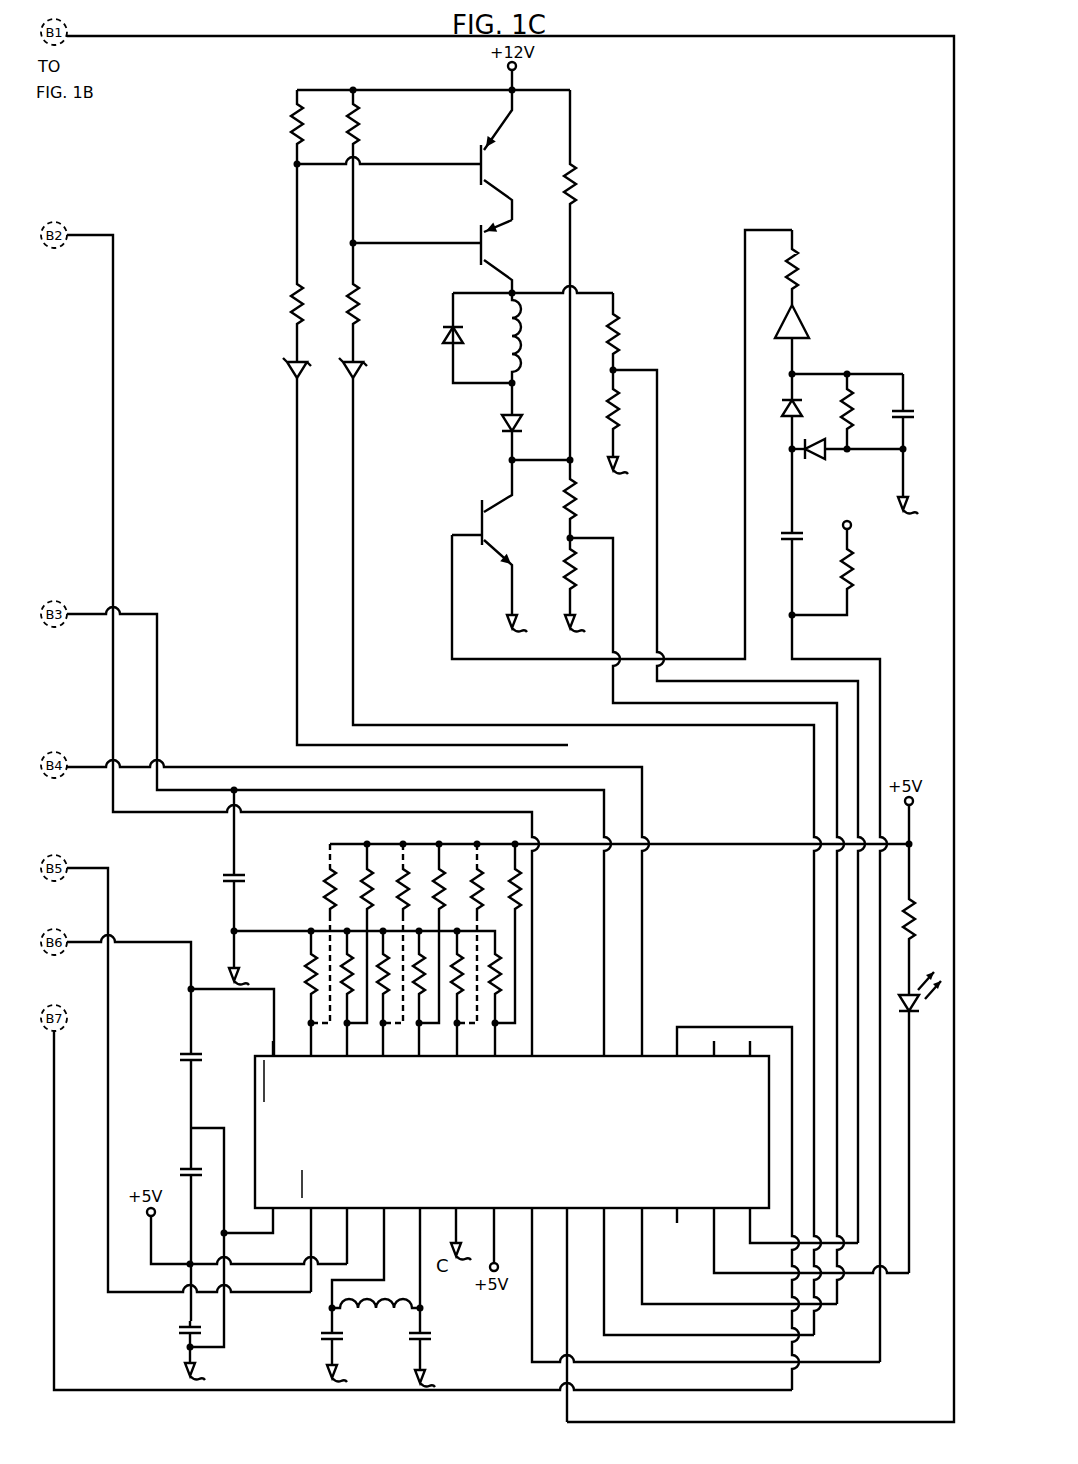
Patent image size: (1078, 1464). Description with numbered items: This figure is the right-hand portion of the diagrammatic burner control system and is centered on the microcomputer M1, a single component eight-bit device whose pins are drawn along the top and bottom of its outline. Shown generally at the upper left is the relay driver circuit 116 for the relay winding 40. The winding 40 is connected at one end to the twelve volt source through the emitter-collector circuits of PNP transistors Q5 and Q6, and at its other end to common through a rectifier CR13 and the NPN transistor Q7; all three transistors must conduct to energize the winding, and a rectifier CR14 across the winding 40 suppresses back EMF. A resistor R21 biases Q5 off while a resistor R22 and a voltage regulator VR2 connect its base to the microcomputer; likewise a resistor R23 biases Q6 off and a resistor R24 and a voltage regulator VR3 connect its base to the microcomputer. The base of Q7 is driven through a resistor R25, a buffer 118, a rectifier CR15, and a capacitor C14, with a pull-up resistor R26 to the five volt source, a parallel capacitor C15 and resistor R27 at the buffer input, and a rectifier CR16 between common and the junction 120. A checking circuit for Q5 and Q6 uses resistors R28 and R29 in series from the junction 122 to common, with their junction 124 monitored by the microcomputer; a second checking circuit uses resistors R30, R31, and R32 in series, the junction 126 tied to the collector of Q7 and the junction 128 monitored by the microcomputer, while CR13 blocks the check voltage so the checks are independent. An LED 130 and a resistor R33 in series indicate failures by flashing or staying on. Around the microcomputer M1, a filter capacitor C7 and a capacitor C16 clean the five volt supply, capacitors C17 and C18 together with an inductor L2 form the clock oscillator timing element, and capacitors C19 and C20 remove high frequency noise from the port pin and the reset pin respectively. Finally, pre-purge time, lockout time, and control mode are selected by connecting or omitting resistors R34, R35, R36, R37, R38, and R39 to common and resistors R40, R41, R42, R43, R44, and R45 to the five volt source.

The relay driver circuit 116 is at (258, 217).
The buffer 118 is at (804, 326).
The junction 120 is at (790, 452).
The junction 122 is at (514, 290).
The junction 124 is at (618, 370).
The junction 126 is at (568, 460).
The junction 128 is at (576, 536).
The LED 130 is at (910, 1012).
The relay winding 40 is at (522, 328).
The microcomputer M1 is at (566, 1224).
The PNP transistor Q5 is at (500, 166).
The PNP transistor Q6 is at (500, 248).
The NPN transistor Q7 is at (498, 532).
The resistor R21 is at (292, 126).
The resistor R22 is at (292, 300).
The resistor R23 is at (358, 126).
The resistor R24 is at (358, 304).
The resistor R25 is at (800, 266).
The pull-up resistor R26 is at (854, 572).
The resistor R27 is at (856, 424).
The resistor R28 is at (620, 328).
The resistor R29 is at (618, 418).
The resistor R30 is at (578, 190).
The resistor R31 is at (576, 500).
The resistor R32 is at (576, 580).
The resistor R33 is at (916, 916).
The resistor R34 is at (307, 976).
The resistor R35 is at (344, 1020).
The resistor R36 is at (380, 1020).
The resistor R37 is at (416, 1020).
The resistor R38 is at (454, 1020).
The resistor R39 is at (492, 1020).
The resistor R40 is at (326, 880).
The resistor R41 is at (362, 856).
The resistor R42 is at (400, 856).
The resistor R43 is at (436, 856).
The resistor R44 is at (474, 856).
The resistor R45 is at (512, 856).
The voltage regulator VR2 is at (290, 372).
The voltage regulator VR3 is at (360, 374).
The rectifier CR13 is at (500, 440).
The rectifier CR14 is at (446, 330).
The rectifier CR15 is at (822, 402).
The rectifier CR16 is at (814, 462).
The filter capacitor C7 is at (186, 1322).
The capacitor C14 is at (788, 538).
The capacitor C15 is at (908, 408).
The capacitor C16 is at (186, 1172).
The capacitor C17 is at (424, 1330).
The capacitor C18 is at (326, 1328).
The capacitor C19 is at (230, 872).
The capacitor C20 is at (186, 1050).
The inductor L2 is at (396, 1318).